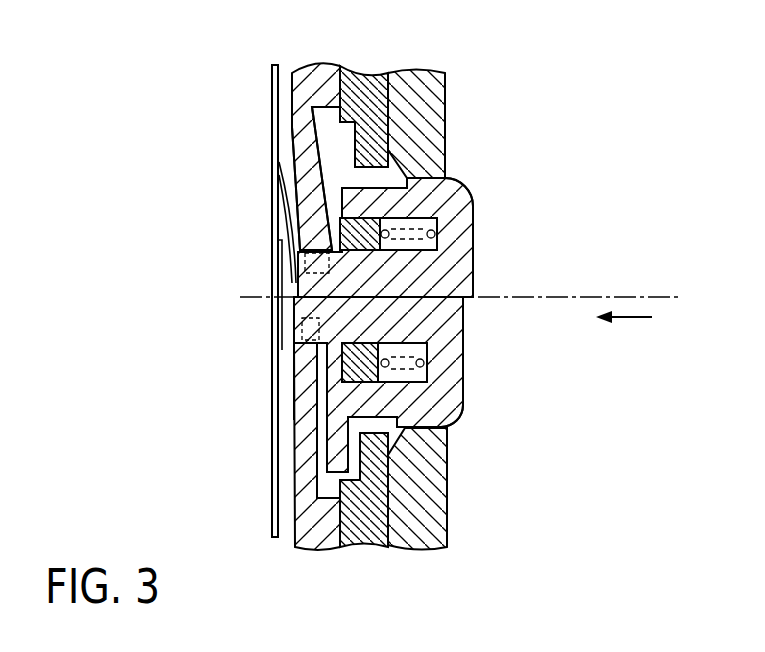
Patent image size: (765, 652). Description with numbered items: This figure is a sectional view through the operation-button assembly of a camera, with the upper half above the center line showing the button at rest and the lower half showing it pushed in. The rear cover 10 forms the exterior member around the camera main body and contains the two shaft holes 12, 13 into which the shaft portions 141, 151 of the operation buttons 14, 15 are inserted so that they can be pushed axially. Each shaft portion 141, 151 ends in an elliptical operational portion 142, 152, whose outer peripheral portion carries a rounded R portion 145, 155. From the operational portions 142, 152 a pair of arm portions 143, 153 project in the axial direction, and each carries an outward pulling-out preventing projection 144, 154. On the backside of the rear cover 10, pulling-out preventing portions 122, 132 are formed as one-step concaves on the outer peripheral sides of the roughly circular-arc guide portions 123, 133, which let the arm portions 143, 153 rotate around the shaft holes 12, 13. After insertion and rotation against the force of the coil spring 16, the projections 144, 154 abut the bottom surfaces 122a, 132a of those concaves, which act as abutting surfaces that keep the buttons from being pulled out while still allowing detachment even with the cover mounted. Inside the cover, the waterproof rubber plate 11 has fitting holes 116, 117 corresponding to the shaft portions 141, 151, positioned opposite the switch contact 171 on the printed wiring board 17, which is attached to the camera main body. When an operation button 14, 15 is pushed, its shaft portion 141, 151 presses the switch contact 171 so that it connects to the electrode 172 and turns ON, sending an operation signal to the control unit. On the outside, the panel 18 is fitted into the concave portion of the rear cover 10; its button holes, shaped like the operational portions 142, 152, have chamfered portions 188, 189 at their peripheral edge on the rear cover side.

The rear cover 10 is at (372, 548).
The waterproof rubber plate 11 is at (303, 78).
The shaft hole 12 is at (249, 417).
The shaft hole 13 is at (294, 347).
The operation button 14 is at (434, 237).
The operation button 15 is at (473, 242).
The coil spring 16 is at (465, 372).
The printed wiring board 17 is at (272, 88).
The panel 18 is at (447, 533).
The fitting hole 116 is at (227, 296).
The fitting hole 117 is at (300, 318).
The pulling-out preventing portion 122 is at (402, 94).
The pulling-out preventing portion 132 is at (375, 78).
The bottom surface 122a is at (521, 109).
The bottom surface 132a is at (445, 110).
The guide portion 123 is at (475, 124).
The guide portion 133 is at (445, 152).
The shaft portion 141 is at (438, 384).
The shaft portion 151 is at (465, 320).
The operational portion 142 is at (540, 251).
The operational portion 152 is at (473, 277).
The arm portion 143 is at (502, 199).
The arm portion 153 is at (466, 198).
The pulling-out preventing projection 144 is at (240, 178).
The pulling-out preventing projection 154 is at (292, 152).
The R portion 145 is at (504, 423).
The R portion 155 is at (468, 420).
The switch contact 171 is at (283, 213).
The electrode 172 is at (282, 270).
The chamfered portion 188 is at (455, 490).
The chamfered portion 189 is at (447, 468).